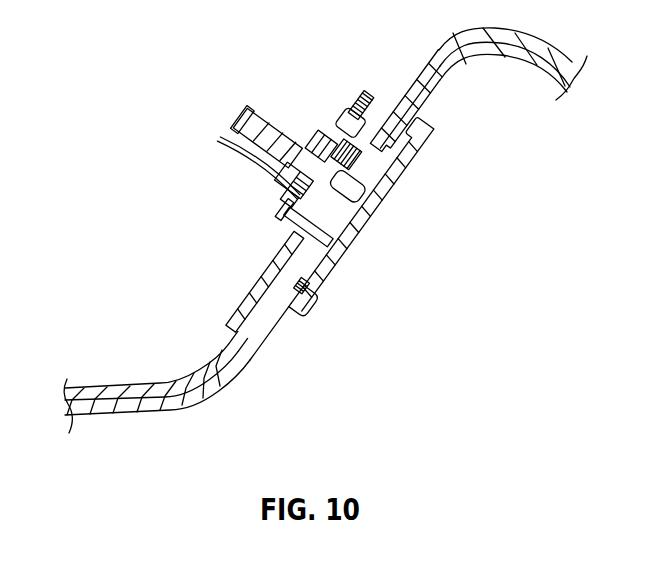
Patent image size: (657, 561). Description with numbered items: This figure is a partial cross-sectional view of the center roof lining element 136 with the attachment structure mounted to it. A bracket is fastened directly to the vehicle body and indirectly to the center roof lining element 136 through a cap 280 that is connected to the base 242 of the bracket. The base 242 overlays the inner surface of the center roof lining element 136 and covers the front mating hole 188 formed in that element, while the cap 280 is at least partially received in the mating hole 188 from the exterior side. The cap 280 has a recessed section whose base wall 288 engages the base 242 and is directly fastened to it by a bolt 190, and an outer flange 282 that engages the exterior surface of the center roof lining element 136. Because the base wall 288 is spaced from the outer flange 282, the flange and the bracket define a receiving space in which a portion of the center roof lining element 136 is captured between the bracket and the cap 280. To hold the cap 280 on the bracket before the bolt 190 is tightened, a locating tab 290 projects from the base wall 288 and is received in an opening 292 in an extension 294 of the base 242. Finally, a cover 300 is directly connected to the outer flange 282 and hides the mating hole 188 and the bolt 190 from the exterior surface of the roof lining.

The center roof lining element 136 is at (165, 410).
The cover 300 is at (384, 205).
The extension 294 is at (366, 105).
The cap 280 is at (338, 262).
The front mating hole 188 is at (300, 220).
The outer flange 282 is at (312, 298).
The base 242 is at (285, 195).
The base wall 288 is at (266, 160).
The bolt 190 is at (240, 113).
The opening 292 is at (346, 122).
The locating tab 290 is at (358, 108).